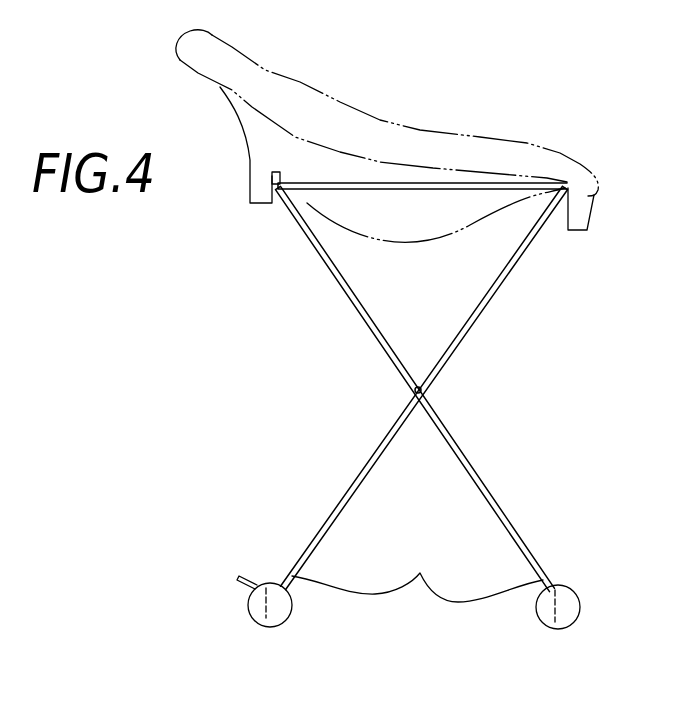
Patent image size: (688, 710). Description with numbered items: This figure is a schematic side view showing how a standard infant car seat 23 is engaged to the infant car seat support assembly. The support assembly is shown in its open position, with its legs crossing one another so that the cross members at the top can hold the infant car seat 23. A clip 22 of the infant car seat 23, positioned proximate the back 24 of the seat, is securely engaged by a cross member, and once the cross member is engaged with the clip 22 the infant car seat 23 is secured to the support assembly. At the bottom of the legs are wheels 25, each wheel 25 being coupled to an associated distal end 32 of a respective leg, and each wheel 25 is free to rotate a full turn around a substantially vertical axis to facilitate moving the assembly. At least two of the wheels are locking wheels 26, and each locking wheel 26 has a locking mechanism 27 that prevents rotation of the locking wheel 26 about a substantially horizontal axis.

The clip 22 is at (275, 175).
The infant car seat 23 is at (293, 103).
The back 24 is at (307, 203).
The wheel 25 is at (573, 607).
The locking wheel 26 is at (257, 610).
The locking mechanism 27 is at (240, 583).
The distal end 32 is at (420, 574).